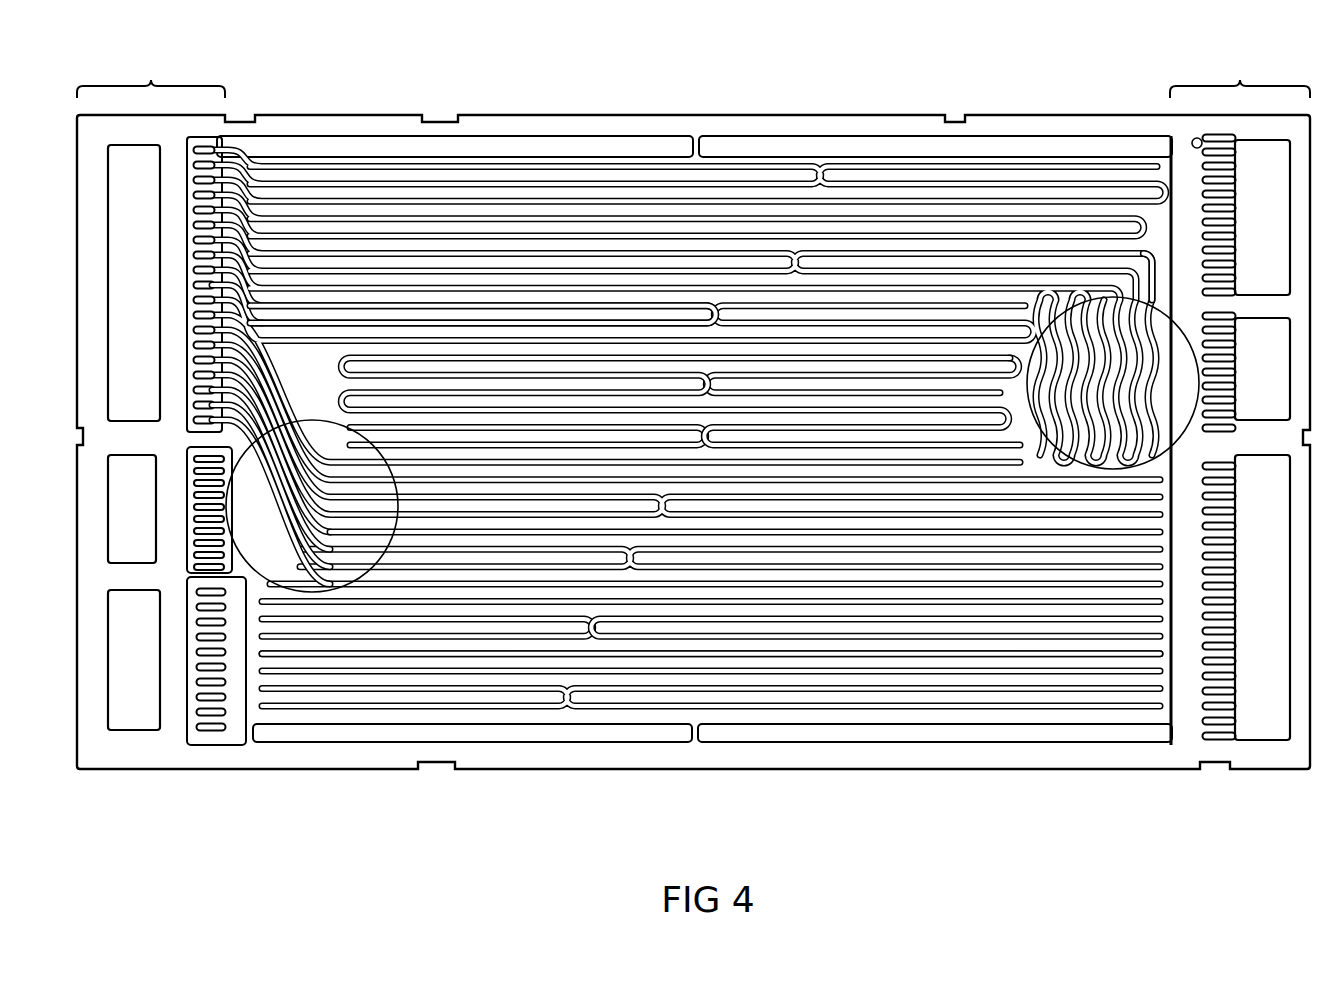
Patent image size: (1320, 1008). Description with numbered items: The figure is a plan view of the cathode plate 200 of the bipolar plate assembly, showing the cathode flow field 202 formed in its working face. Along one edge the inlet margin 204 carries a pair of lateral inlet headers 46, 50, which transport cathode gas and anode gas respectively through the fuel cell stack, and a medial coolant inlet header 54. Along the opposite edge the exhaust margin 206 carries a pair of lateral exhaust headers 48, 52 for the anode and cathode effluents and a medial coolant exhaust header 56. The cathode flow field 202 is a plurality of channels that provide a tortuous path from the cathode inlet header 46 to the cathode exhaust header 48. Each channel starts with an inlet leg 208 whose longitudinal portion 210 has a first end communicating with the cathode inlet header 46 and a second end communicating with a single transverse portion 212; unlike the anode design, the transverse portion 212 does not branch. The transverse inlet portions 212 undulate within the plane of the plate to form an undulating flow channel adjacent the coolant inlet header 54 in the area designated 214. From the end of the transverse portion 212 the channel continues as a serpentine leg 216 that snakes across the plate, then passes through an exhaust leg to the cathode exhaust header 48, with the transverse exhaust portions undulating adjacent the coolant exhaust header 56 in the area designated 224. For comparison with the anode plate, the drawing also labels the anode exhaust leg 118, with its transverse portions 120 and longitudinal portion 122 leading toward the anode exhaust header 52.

The cathode plate 200 is at (453, 805).
The cathode flow field 202 is at (665, 735).
The inlet margin 204 is at (1240, 66).
The exhaust margin 206 is at (151, 70).
The inlet leg 208 is at (976, 630).
The longitudinal portion 210 is at (1050, 640).
The transverse portion 212 is at (942, 602).
The undulating flow channel area 214 is at (1178, 300).
The serpentine leg 216 is at (730, 545).
The undulating flow channel area 224 is at (245, 395).
The exhaust leg 118 is at (341, 330).
The transverse portions 120 is at (336, 375).
The longitudinal portion 122 is at (256, 325).
The cathode inlet header 46 is at (1248, 613).
The cathode exhaust header 48 is at (118, 291).
The anode inlet header 50 is at (1248, 209).
The anode exhaust header 52 is at (121, 688).
The coolant inlet header 54 is at (1250, 389).
The coolant exhaust header 56 is at (121, 536).